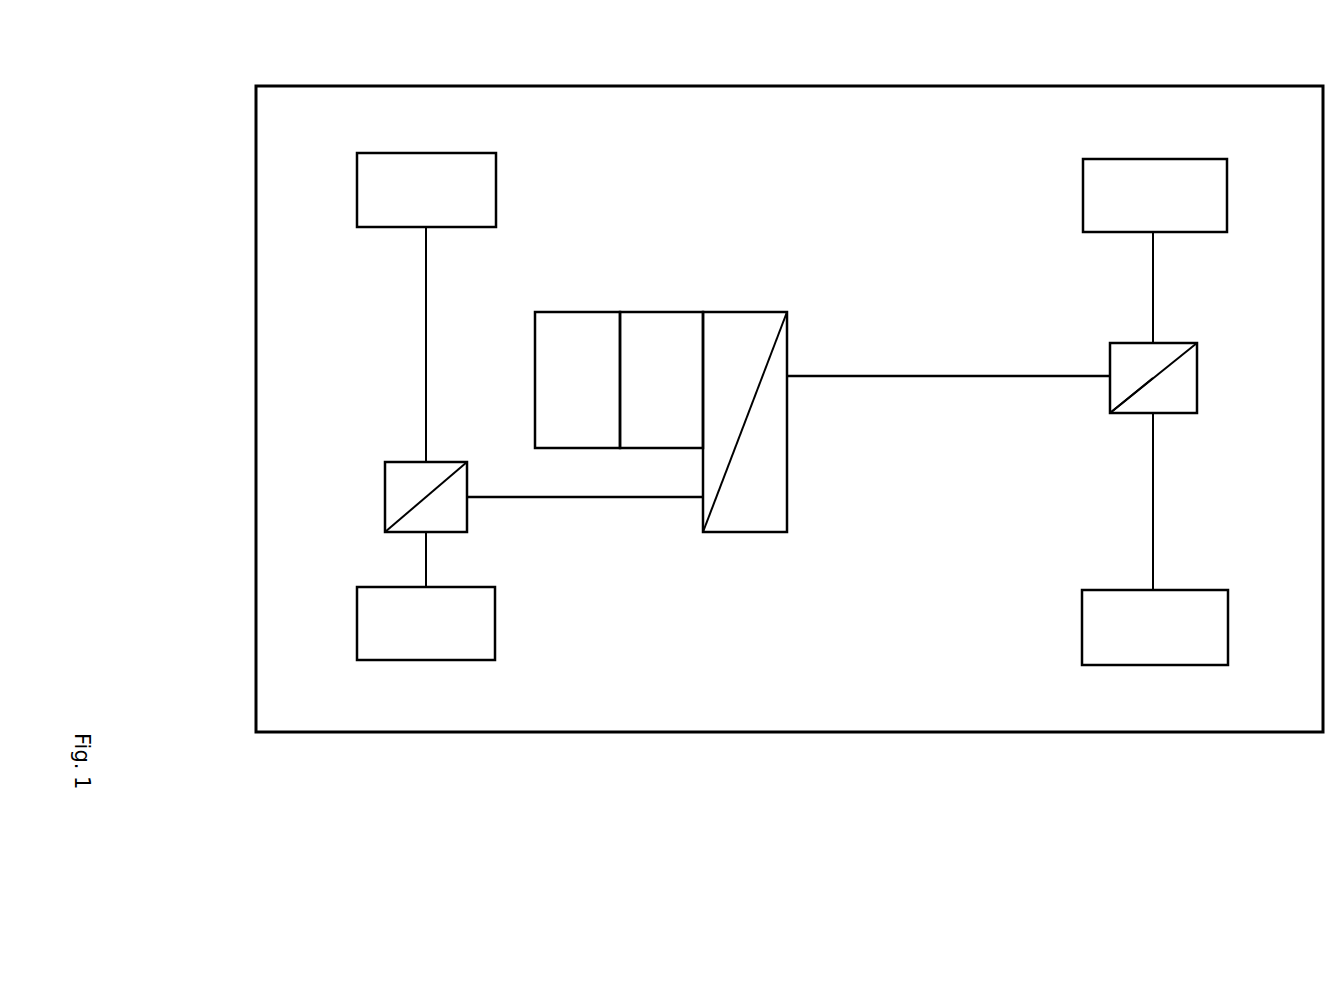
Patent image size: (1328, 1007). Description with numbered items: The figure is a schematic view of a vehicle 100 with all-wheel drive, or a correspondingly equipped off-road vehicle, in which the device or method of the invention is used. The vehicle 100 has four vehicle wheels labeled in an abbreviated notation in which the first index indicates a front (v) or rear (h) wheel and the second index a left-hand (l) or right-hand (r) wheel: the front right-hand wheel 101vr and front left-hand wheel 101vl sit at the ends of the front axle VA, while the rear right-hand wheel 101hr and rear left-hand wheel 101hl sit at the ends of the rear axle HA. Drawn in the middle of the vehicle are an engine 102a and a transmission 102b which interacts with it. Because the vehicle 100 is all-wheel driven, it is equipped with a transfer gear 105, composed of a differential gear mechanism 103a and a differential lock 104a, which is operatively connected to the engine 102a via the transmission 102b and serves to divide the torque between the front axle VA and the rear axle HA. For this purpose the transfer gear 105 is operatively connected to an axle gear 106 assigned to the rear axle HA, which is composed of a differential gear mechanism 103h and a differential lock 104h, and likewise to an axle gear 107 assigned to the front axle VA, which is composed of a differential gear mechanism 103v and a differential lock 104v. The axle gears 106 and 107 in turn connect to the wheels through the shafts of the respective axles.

The vehicle 100 is at (1110, 87).
The front right-hand vehicle wheel 101vr is at (433, 152).
The front left-hand vehicle wheel 101vl is at (428, 660).
The rear right-hand vehicle wheel 101hr is at (1172, 160).
The rear left-hand vehicle wheel 101hl is at (1167, 665).
The engine 102a is at (580, 355).
The transmission 102b is at (670, 348).
The differential gear mechanism 103a is at (733, 348).
The differential lock 104a is at (768, 487).
The transfer gear 105 is at (787, 312).
The differential gear mechanism 103v is at (420, 482).
The differential lock 104v is at (450, 510).
The axle gear 107 is at (467, 532).
The differential gear mechanism 103h is at (1127, 360).
The differential lock 104h is at (1157, 393).
The axle gear 106 is at (1110, 413).
The front axle VA is at (420, 327).
The rear axle HA is at (1160, 523).